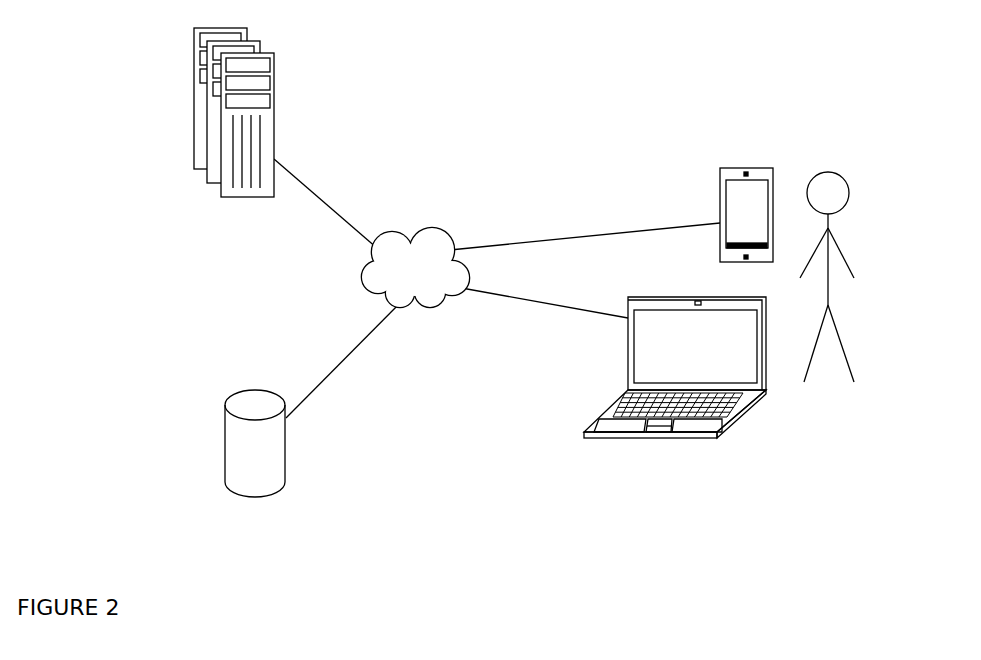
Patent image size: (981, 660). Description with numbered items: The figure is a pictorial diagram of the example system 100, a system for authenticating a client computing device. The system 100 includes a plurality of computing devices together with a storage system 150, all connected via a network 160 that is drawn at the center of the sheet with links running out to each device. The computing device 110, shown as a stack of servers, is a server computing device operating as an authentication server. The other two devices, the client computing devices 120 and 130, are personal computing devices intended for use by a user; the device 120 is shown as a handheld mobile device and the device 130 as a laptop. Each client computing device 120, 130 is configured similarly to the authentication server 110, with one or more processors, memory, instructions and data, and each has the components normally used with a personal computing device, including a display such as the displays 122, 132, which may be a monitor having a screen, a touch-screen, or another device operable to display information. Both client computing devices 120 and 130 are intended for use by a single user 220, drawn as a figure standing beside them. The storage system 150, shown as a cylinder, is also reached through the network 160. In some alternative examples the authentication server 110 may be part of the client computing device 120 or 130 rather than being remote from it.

The example system 100 is at (78, 575).
The authentication server 110 is at (274, 85).
The client computing device 120 is at (707, 215).
The display 122 is at (726, 211).
The client computing device 130 is at (657, 367).
The display 132 is at (634, 377).
The storage system 150 is at (287, 455).
The network 160 is at (403, 264).
The user 220 is at (852, 270).